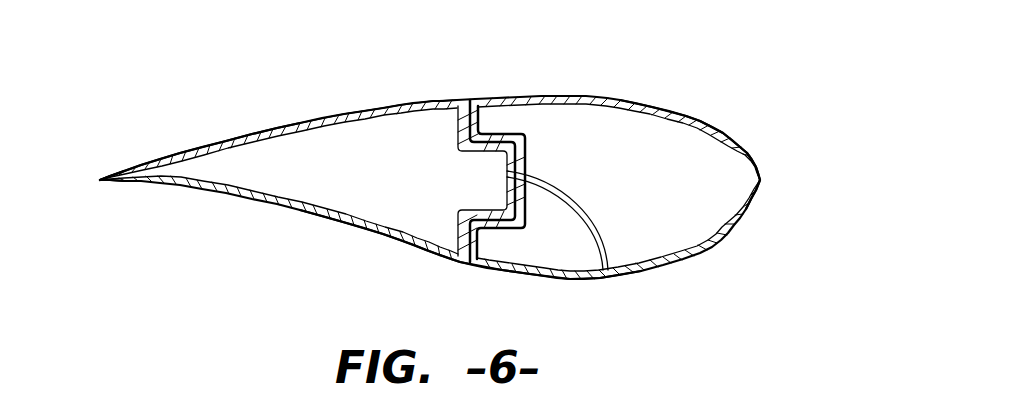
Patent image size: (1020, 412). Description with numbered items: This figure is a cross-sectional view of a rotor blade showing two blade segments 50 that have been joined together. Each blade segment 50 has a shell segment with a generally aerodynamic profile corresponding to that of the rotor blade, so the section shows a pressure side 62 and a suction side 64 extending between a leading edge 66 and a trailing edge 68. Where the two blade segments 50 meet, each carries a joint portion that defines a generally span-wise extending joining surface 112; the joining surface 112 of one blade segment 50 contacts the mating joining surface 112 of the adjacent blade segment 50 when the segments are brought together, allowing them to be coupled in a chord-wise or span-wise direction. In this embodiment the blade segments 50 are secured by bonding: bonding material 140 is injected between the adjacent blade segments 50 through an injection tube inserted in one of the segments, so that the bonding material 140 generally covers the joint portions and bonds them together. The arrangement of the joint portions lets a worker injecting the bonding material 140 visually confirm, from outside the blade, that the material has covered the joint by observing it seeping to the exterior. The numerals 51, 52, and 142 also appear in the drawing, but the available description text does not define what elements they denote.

The blade segment 50 is at (265, 113).
The leading edge portion of skin 51 is at (208, 143).
The trailing portion of skin 52 is at (667, 103).
The pressure side 62 is at (503, 267).
The suction side 64 is at (372, 108).
The leading edge 66 is at (763, 182).
The trailing edge 68 is at (103, 180).
The joining surface 112 is at (462, 132).
The bonding material 140 is at (610, 275).
The bond joint 142 is at (466, 103).